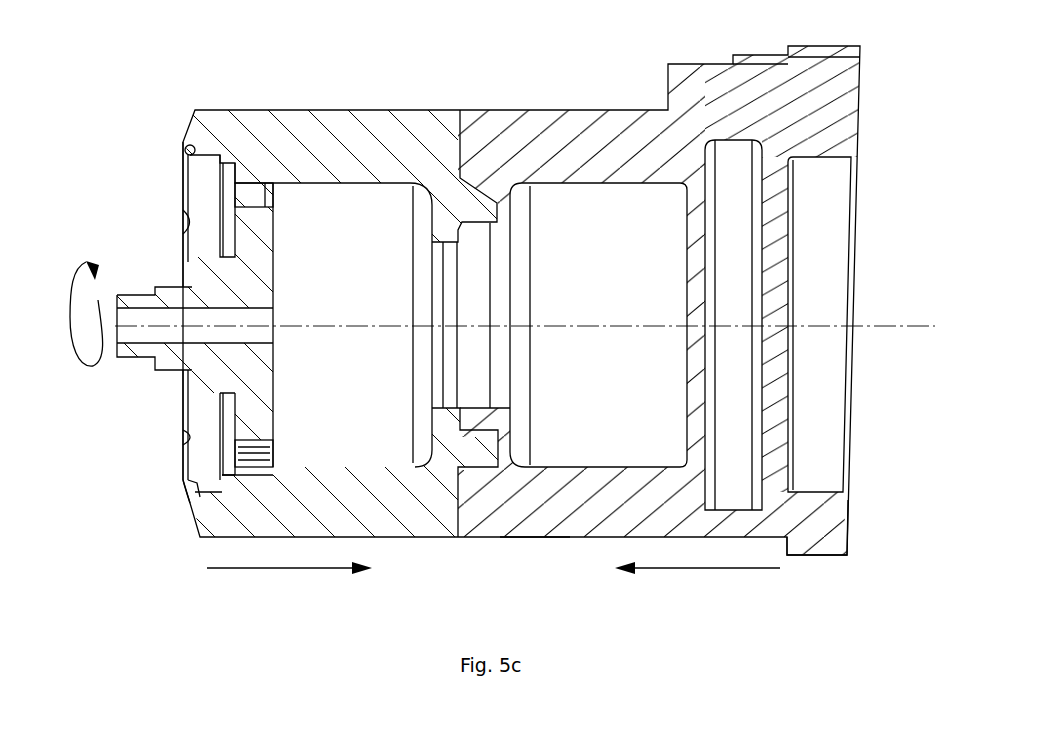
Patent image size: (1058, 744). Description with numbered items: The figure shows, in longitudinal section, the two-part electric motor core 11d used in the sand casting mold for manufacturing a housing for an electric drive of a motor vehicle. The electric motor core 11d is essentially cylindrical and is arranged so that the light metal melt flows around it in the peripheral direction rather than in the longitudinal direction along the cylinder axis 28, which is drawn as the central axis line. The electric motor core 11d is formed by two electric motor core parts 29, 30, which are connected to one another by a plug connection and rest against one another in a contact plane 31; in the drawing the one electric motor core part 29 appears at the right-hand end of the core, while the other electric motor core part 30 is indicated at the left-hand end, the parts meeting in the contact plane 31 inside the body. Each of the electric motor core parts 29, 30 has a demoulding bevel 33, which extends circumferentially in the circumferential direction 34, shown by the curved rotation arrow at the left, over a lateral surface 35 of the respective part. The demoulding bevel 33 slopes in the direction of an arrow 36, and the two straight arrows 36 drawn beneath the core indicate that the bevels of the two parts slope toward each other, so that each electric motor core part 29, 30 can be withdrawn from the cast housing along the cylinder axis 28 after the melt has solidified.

The electric motor core 11d is at (862, 533).
The cylinder axis 28 is at (931, 322).
The electric motor core part 29 is at (840, 102).
The electric motor core part 30 is at (190, 127).
The contact plane 31 is at (472, 137).
The demoulding bevel 33 is at (530, 537).
The circumferential direction 34 is at (90, 367).
The lateral surface 35 is at (535, 560).
The arrow 36 is at (693, 568).